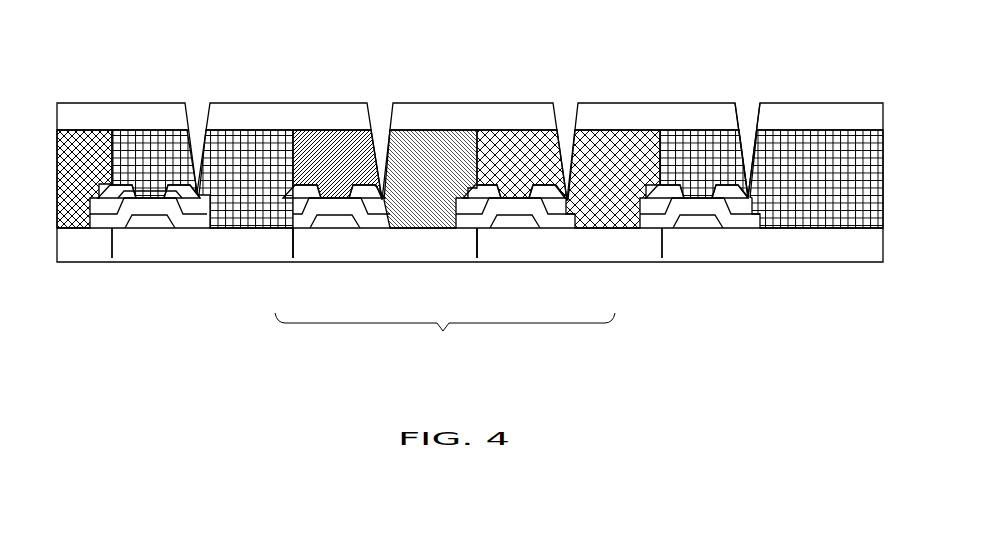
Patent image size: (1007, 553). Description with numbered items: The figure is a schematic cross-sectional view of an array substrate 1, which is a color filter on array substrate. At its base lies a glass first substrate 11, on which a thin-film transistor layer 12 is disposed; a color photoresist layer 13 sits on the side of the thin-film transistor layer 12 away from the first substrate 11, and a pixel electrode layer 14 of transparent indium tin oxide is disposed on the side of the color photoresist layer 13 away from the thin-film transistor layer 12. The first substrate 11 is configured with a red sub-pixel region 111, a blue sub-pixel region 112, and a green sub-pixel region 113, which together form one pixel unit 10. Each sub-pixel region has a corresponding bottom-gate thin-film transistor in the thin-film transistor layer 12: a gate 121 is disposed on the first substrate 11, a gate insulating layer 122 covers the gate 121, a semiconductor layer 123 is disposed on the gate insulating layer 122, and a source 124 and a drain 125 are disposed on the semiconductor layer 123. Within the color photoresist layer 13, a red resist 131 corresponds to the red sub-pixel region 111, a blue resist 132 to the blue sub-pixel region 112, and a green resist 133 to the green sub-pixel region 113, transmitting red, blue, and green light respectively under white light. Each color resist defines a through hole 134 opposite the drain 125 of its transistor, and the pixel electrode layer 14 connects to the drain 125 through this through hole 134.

The array substrate 1 is at (90, 30).
The pixel unit 10 is at (445, 332).
The first substrate 11 is at (885, 237).
The thin-film transistor layer 12 is at (728, 224).
The color photoresist layer 13 is at (887, 192).
The pixel electrode layer 14 is at (885, 112).
The red sub-pixel region 111 is at (218, 252).
The blue sub-pixel region 112 is at (383, 254).
The green sub-pixel region 113 is at (567, 254).
The gate 121 is at (143, 228).
The gate insulating layer 122 is at (100, 220).
The semiconductor layer 123 is at (100, 223).
The source 124 is at (56, 190).
The drain 125 is at (56, 165).
The red resist 131 is at (238, 140).
The blue resist 132 is at (437, 135).
The green resist 133 is at (612, 130).
The through hole 134 is at (753, 180).